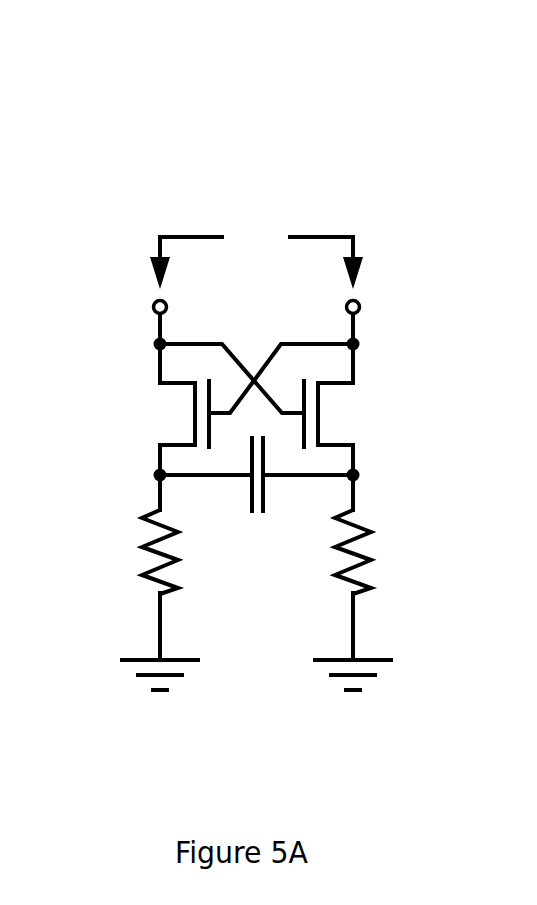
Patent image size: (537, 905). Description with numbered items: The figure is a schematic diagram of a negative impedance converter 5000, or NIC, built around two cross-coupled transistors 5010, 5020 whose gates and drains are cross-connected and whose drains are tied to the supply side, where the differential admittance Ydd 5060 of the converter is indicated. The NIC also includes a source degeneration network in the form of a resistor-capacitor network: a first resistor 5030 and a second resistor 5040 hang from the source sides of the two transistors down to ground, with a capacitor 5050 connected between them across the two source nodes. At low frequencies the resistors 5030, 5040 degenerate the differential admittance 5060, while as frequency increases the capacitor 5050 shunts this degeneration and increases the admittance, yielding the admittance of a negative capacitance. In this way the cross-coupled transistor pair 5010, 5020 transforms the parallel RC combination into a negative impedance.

The negative impedance converter 5000 is at (459, 60).
The cross-coupled transistor 5010 is at (150, 410).
The cross-coupled transistor 5020 is at (375, 408).
The resistor 5030 is at (85, 533).
The resistor 5040 is at (423, 523).
The capacitor 5050 is at (266, 553).
The differential admittance Ydd 5060 is at (230, 207).